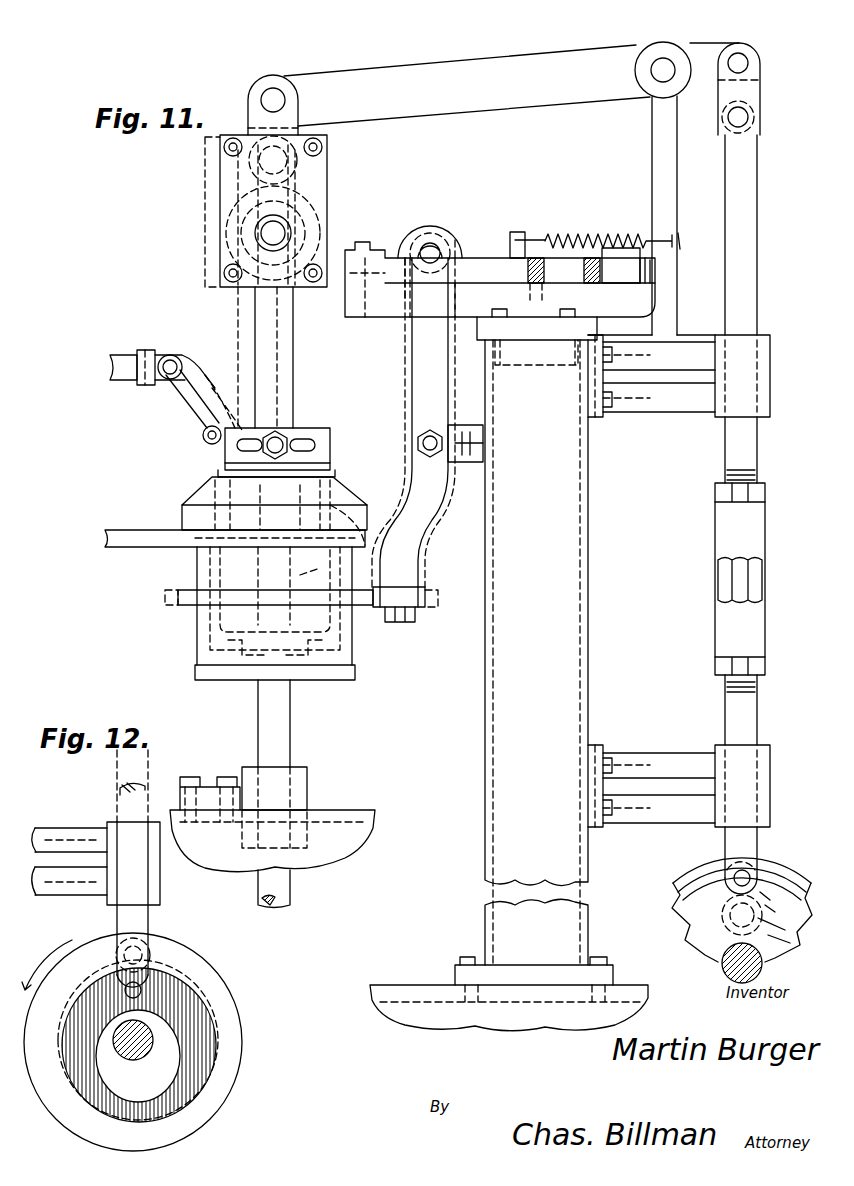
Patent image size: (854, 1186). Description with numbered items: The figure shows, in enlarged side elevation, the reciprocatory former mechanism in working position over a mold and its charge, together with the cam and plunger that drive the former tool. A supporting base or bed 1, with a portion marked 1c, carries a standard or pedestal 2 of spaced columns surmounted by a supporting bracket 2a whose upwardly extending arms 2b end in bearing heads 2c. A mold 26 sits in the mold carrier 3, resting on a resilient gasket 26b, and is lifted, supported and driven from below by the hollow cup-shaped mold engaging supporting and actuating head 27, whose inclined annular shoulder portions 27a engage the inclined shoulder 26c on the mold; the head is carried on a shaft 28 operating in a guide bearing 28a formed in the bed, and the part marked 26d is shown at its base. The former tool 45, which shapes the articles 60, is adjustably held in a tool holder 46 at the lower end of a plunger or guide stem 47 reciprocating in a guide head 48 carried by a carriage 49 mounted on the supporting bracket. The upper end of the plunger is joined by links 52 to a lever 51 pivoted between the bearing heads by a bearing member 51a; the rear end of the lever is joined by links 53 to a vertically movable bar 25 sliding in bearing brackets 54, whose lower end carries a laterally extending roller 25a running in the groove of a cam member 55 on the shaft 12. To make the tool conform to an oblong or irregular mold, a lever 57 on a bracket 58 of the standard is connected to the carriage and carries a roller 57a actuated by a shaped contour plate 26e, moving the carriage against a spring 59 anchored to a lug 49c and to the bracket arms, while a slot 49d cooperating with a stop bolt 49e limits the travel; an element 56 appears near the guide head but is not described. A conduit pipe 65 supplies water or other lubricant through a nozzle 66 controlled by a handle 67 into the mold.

In FIG. 11, the supporting base or bed 1 is at (413, 1000).
In FIG. 11, the base portion 1c is at (345, 810).
In FIG. 11, the standard or pedestal 2 is at (485, 690).
In FIG. 11, the supporting bracket 2a is at (535, 330).
In FIG. 11, the upwardly extending arms 2b is at (652, 152).
In FIG. 11, the bearing heads 2c is at (672, 45).
In FIG. 11, the mold carrier 3 is at (140, 540).
In FIG. 11, the shaft 12 is at (762, 965).
In FIG. 12, the shaft 12 is at (133, 1060).
In FIG. 11, the vertically movable bar 25 is at (757, 716).
In FIG. 12, the vertically movable bar 25 is at (148, 918).
In FIG. 11, the laterally extending roller 25a is at (758, 878).
In FIG. 12, the laterally extending roller 25a is at (162, 985).
In FIG. 11, the mold 26 is at (212, 490).
In FIG. 11, the gasket 26b is at (182, 521).
In FIG. 11, the inclined shoulder 26c is at (368, 525).
In FIG. 11, the cylinder bottom 26d is at (340, 668).
In FIG. 11, the contour plate 26e is at (180, 597).
In FIG. 11, the mold engaging supporting and actuating head 27 is at (352, 650).
In FIG. 11, the inclined annular shoulder portions 27a is at (345, 497).
In FIG. 11, the shaft 28 is at (290, 732).
In FIG. 11, the guide bearing 28a is at (302, 782).
In FIG. 11, the former tool 45 is at (340, 575).
In FIG. 11, the tool holder 46 is at (318, 430).
In FIG. 11, the plunger or guide stem 47 is at (293, 350).
In FIG. 11, the guide head 48 is at (327, 185).
In FIG. 11, the carriage 49 is at (470, 256).
In FIG. 11, the lug 49c is at (517, 230).
In FIG. 11, the slot 49d is at (550, 270).
In FIG. 11, the stop bolt 49e is at (570, 262).
In FIG. 11, the lever 51 is at (462, 108).
In FIG. 11, the bearing member 51a is at (652, 66).
In FIG. 11, the links 52 is at (250, 122).
In FIG. 11, the links 53 is at (760, 92).
In FIG. 11, the bearing brackets 54 is at (770, 362).
In FIG. 12, the bearing brackets 54 is at (110, 828).
In FIG. 12, the cam member 55 is at (237, 997).
In FIG. 11, the guide slot 56 is at (320, 162).
In FIG. 11, the lever 57 is at (425, 395).
In FIG. 11, the roller 57a is at (425, 595).
In FIG. 11, the bracket 58 is at (462, 462).
In FIG. 11, the spring 59 is at (580, 234).
In FIG. 11, the articles 60 is at (230, 475).
In FIG. 11, the conduit pipe 65 is at (115, 360).
In FIG. 11, the nozzle 66 is at (208, 375).
In FIG. 11, the handle 67 is at (190, 398).